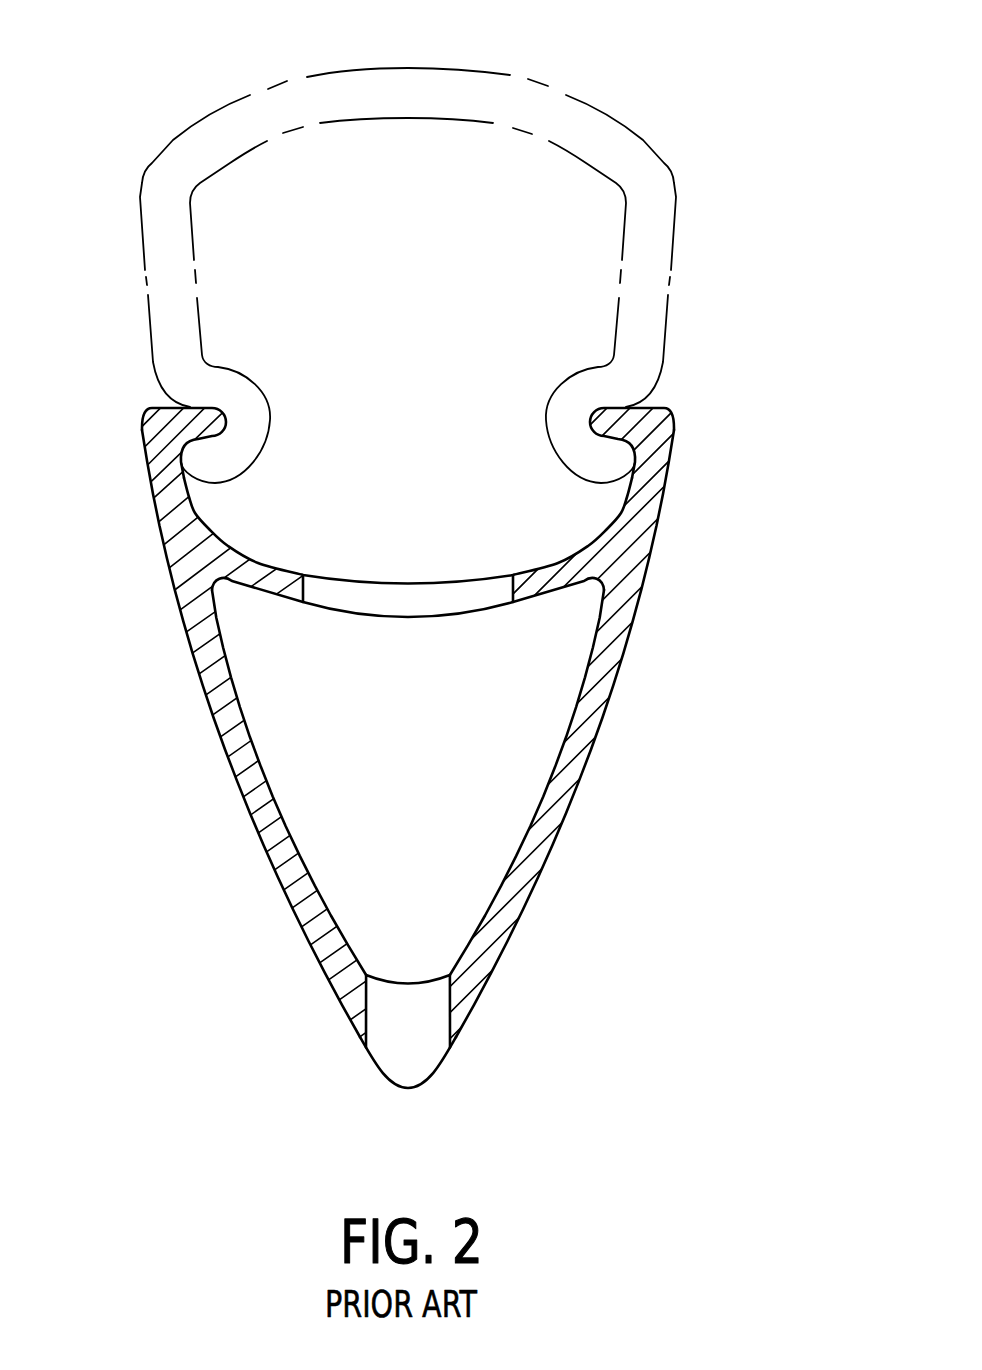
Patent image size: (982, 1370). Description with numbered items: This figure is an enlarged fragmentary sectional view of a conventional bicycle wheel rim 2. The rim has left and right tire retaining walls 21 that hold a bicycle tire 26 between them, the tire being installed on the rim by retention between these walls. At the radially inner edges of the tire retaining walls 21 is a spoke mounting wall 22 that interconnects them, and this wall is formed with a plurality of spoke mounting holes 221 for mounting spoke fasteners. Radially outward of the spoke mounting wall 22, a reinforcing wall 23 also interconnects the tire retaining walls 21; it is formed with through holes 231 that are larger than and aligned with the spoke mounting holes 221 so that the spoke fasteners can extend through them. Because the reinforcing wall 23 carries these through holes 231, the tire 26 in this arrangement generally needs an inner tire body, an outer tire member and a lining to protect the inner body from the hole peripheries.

The bicycle wheel rim 2 is at (294, 915).
The tire retaining walls 21 is at (242, 793).
The spoke mounting wall 22 is at (465, 997).
The spoke mounting holes 221 is at (405, 1006).
The reinforcing wall 23 is at (546, 568).
The through holes 231 is at (400, 600).
The bicycle tire 26 is at (590, 105).